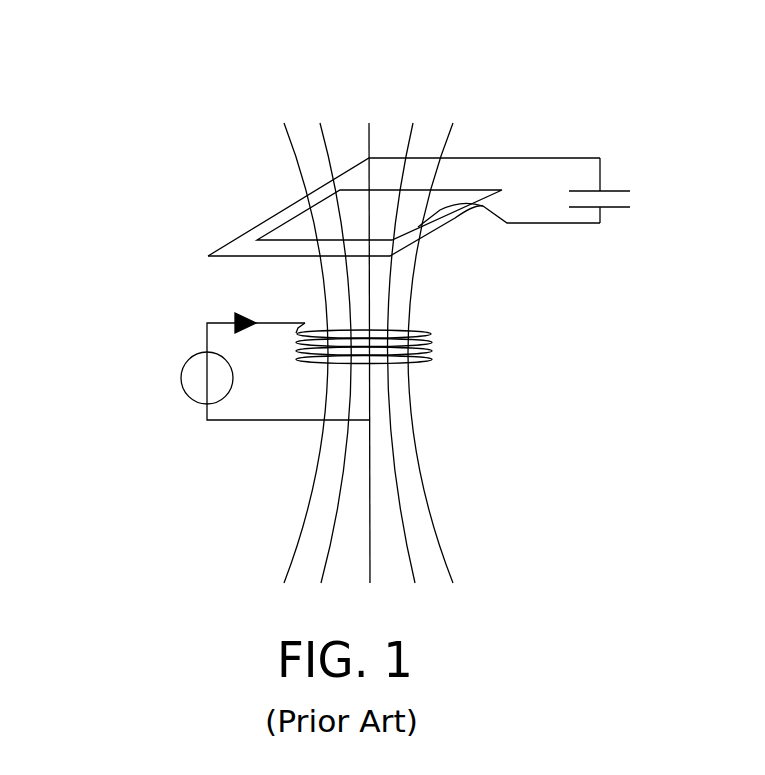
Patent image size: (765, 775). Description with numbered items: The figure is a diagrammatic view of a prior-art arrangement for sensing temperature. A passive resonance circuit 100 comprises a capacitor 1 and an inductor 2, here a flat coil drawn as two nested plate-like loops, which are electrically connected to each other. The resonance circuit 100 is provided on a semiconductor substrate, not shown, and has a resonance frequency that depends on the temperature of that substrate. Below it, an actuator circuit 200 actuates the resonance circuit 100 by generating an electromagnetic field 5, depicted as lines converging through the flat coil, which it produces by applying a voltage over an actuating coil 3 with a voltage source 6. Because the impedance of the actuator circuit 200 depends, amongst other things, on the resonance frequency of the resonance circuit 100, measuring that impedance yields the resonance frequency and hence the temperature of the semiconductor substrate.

The capacitor 1 is at (623, 208).
The inductor 2 is at (243, 235).
The actuating coil 3 is at (432, 352).
The electromagnetic field 5 is at (427, 492).
The voltage source 6 is at (181, 379).
The passive resonance circuit 100 is at (190, 135).
The actuator circuit 200 is at (116, 475).